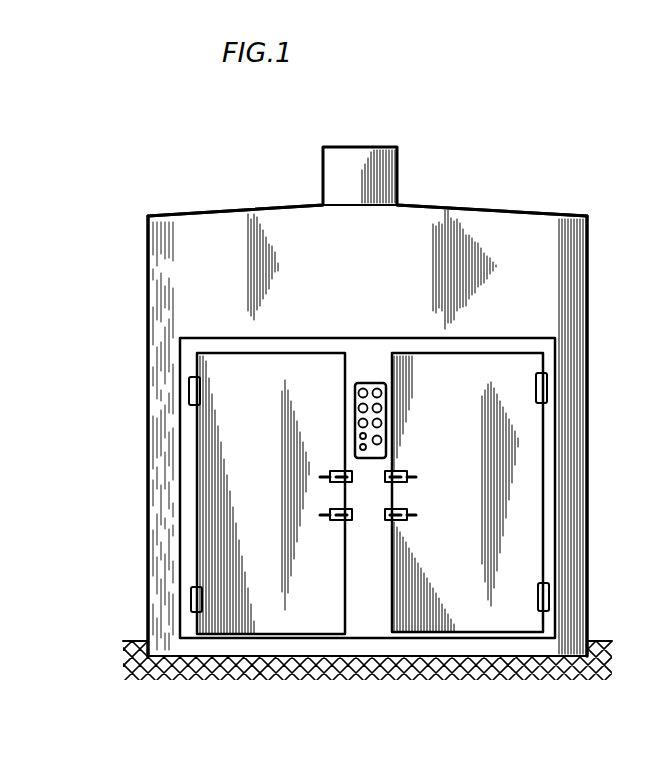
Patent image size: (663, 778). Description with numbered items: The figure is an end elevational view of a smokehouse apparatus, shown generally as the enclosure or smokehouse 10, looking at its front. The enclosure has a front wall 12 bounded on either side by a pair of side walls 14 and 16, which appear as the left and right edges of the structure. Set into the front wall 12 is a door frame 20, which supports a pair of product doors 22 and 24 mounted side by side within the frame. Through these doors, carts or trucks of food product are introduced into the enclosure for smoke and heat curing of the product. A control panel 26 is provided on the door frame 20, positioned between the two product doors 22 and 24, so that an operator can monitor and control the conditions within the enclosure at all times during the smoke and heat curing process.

The smokehouse 10 is at (483, 204).
The front wall 12 is at (548, 225).
The side wall 14 is at (150, 392).
The side wall 16 is at (588, 430).
The door frame 20 is at (548, 346).
The product door 22 is at (230, 544).
The product door 24 is at (522, 548).
The control panel 26 is at (367, 383).